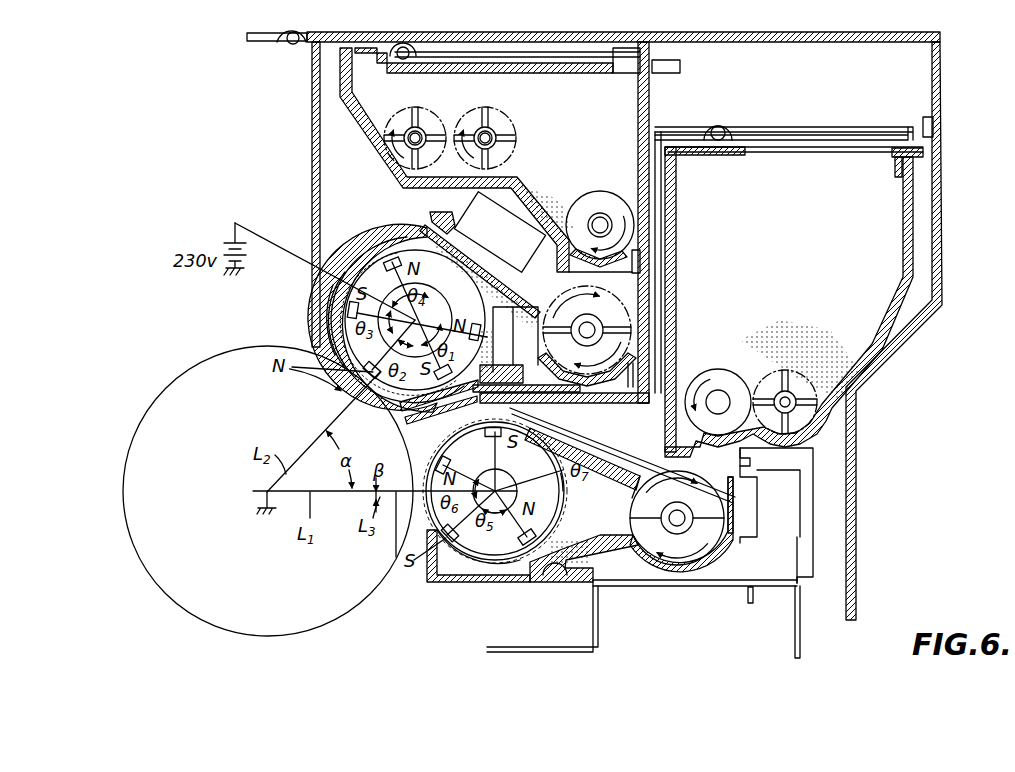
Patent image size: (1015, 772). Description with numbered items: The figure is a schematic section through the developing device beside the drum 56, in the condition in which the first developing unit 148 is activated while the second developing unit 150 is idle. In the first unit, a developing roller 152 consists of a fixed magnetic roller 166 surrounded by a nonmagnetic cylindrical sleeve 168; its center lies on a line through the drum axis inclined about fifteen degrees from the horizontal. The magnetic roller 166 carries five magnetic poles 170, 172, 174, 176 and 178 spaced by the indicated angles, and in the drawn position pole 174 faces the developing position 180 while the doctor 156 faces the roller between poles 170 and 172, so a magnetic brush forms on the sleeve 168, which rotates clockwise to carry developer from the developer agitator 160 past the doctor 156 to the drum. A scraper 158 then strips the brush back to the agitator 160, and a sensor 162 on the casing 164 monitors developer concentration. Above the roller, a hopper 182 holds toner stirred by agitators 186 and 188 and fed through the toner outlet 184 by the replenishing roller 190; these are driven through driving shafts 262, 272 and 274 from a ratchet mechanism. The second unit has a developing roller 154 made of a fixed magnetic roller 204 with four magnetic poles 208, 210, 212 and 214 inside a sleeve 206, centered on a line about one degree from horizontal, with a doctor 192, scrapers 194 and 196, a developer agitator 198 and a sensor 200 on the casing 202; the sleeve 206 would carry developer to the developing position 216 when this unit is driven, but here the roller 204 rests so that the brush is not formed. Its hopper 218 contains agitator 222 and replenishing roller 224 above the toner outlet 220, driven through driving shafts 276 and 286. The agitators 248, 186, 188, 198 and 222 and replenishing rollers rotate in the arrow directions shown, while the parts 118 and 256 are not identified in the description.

The drum 56 is at (303, 612).
The housing 118 is at (952, 303).
The first developing unit 148 is at (649, 107).
The second developing unit 150 is at (810, 467).
The developing roller 152 is at (352, 268).
The developing roller 154 is at (480, 553).
The doctor 156 is at (500, 403).
The scraper 158 is at (478, 270).
The developer agitator 160 is at (624, 330).
The sensor 162 is at (480, 203).
The casing 164 is at (397, 227).
The fixed magnetic roller 166 is at (323, 283).
The cylindrical sleeve 168 is at (322, 335).
The magnetic pole 170 is at (480, 336).
The magnetic pole 172 is at (396, 416).
The magnetic pole 174 is at (377, 393).
The magnetic pole 176 is at (327, 313).
The magnetic pole 178 is at (400, 237).
The developing position 180 is at (357, 397).
The hopper 182 is at (338, 90).
The toner outlet 184 is at (577, 200).
The agitator 186 is at (413, 110).
The agitator 188 is at (517, 138).
The replenishing roller 190 is at (600, 193).
The doctor 192 is at (523, 567).
The scraper 194 is at (612, 463).
The scraper 196 is at (733, 525).
The developer agitator 198 is at (708, 527).
The sensor 200 is at (797, 537).
The casing 202 is at (667, 575).
The fixed magnetic roller 204 is at (497, 543).
The cylindrical sleeve 206 is at (452, 585).
The magnetic pole 208 is at (518, 491).
The magnetic pole 210 is at (430, 570).
The magnetic pole 212 is at (490, 436).
The magnetic pole 214 is at (500, 436).
The developing position 216 is at (410, 497).
The hopper 218 is at (918, 342).
The toner outlet 220 is at (697, 447).
The agitator 222 is at (786, 387).
The replenishing roller 224 is at (702, 372).
The agitator 248 is at (581, 326).
The shaft 256 is at (678, 530).
The driving shaft 262 is at (428, 135).
The driving shaft 272 is at (488, 135).
The driving shaft 274 is at (602, 222).
The driving shaft 276 is at (852, 416).
The driving shaft 286 is at (720, 397).